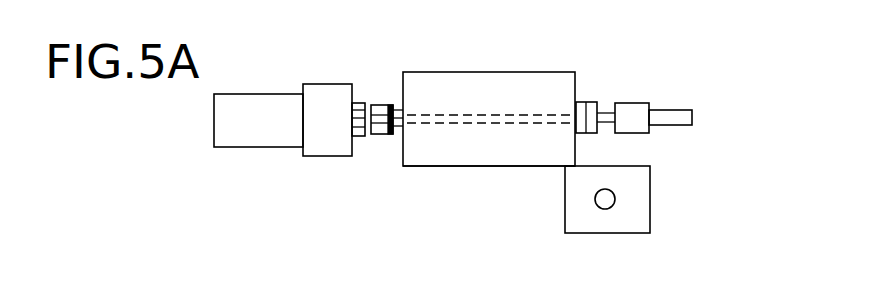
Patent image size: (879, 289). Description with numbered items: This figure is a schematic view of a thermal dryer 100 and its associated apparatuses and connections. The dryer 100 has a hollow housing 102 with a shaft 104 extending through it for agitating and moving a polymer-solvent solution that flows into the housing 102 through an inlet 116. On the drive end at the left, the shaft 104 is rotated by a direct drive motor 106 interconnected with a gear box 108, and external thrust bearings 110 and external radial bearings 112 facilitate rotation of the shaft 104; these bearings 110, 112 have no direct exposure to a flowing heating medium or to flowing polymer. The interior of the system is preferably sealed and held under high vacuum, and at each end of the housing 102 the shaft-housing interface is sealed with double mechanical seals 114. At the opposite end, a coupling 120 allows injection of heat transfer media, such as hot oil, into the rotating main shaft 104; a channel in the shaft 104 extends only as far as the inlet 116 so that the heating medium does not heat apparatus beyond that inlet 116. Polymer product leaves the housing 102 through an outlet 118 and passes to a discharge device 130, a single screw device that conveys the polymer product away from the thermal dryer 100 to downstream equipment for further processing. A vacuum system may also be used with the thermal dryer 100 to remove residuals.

The thermal dryer 100 is at (428, 72).
The hollow housing 102 is at (495, 166).
The shaft 104 is at (530, 114).
The direct drive motor 106 is at (277, 148).
The gear box 108 is at (319, 84).
The external thrust bearings 110 is at (360, 140).
The external radial bearings 112 is at (387, 140).
The double mechanical seals 114 is at (397, 102).
The inlet 116 is at (405, 127).
The outlet 118 is at (575, 103).
The coupling 120 is at (642, 133).
The discharge device 130 is at (600, 233).